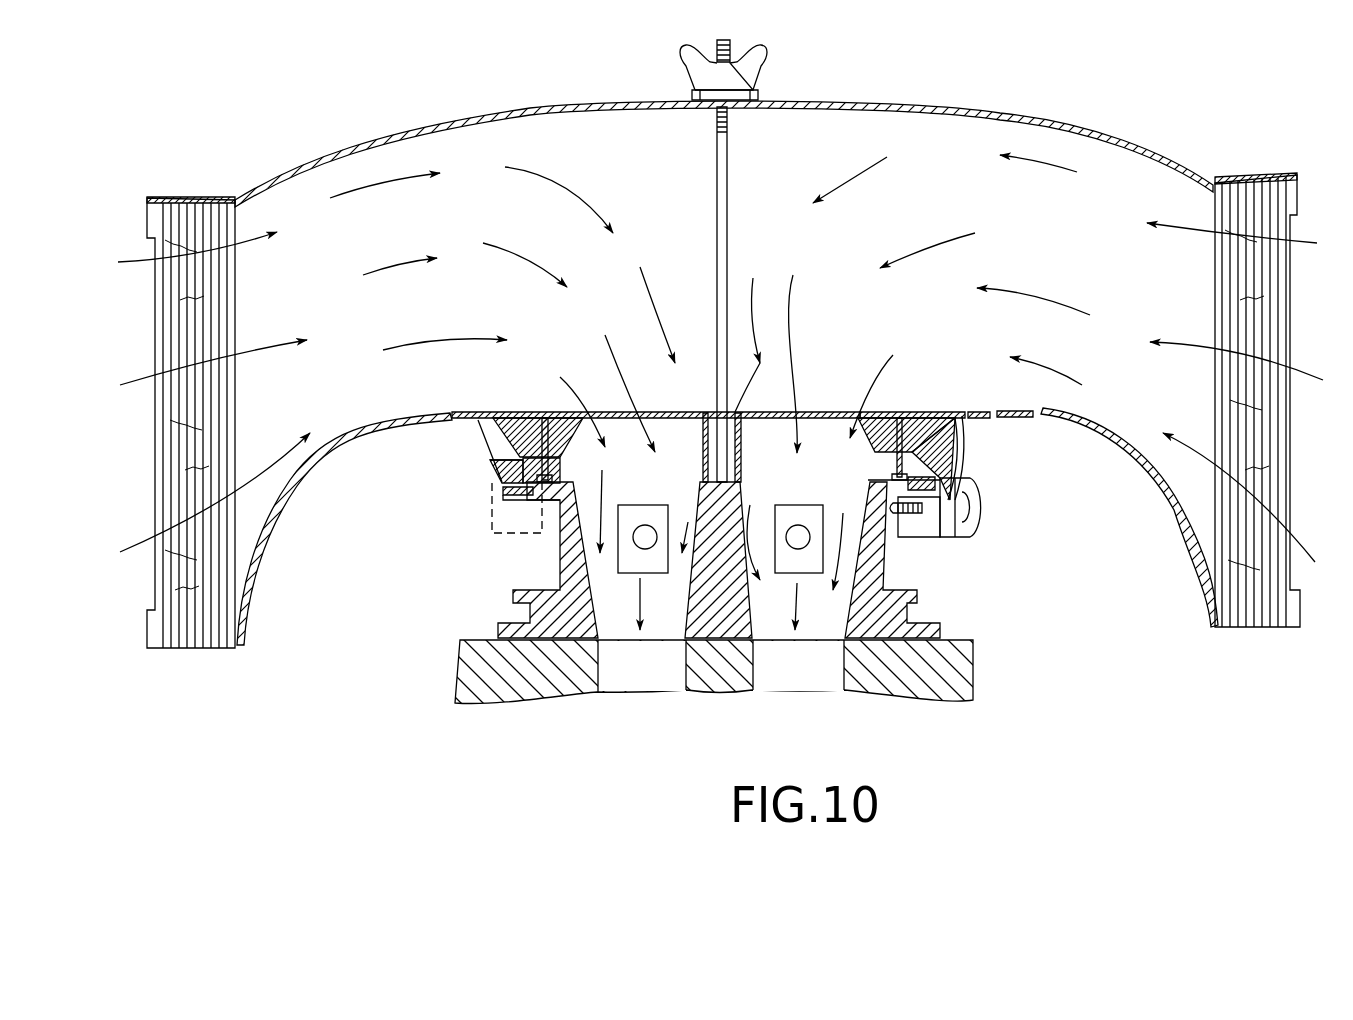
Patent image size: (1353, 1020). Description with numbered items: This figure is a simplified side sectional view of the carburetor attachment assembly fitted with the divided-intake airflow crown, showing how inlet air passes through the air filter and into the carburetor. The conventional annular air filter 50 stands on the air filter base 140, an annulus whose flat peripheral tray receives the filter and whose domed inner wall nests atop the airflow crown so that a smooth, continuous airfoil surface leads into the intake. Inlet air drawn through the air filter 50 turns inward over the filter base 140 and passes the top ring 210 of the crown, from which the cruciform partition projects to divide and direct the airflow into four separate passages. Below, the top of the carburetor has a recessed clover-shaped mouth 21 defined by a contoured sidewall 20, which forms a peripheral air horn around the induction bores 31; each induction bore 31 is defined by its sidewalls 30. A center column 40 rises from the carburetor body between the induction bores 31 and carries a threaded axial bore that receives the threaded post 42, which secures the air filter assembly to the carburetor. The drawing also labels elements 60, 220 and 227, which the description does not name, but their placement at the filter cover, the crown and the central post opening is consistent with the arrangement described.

The cover 60 is at (885, 100).
The air filter 50 is at (1222, 293).
The threaded post 42 is at (723, 215).
The opening 227 is at (761, 328).
The plate 220 is at (805, 412).
The top ring 210 is at (925, 400).
The air filter base 140 is at (1147, 473).
The center column 40 is at (750, 505).
The contoured sidewall 20 is at (601, 492).
The recessed clover-shaped mouth 21 is at (697, 516).
The induction bores 31 is at (665, 679).
The sidewalls 30 is at (600, 655).